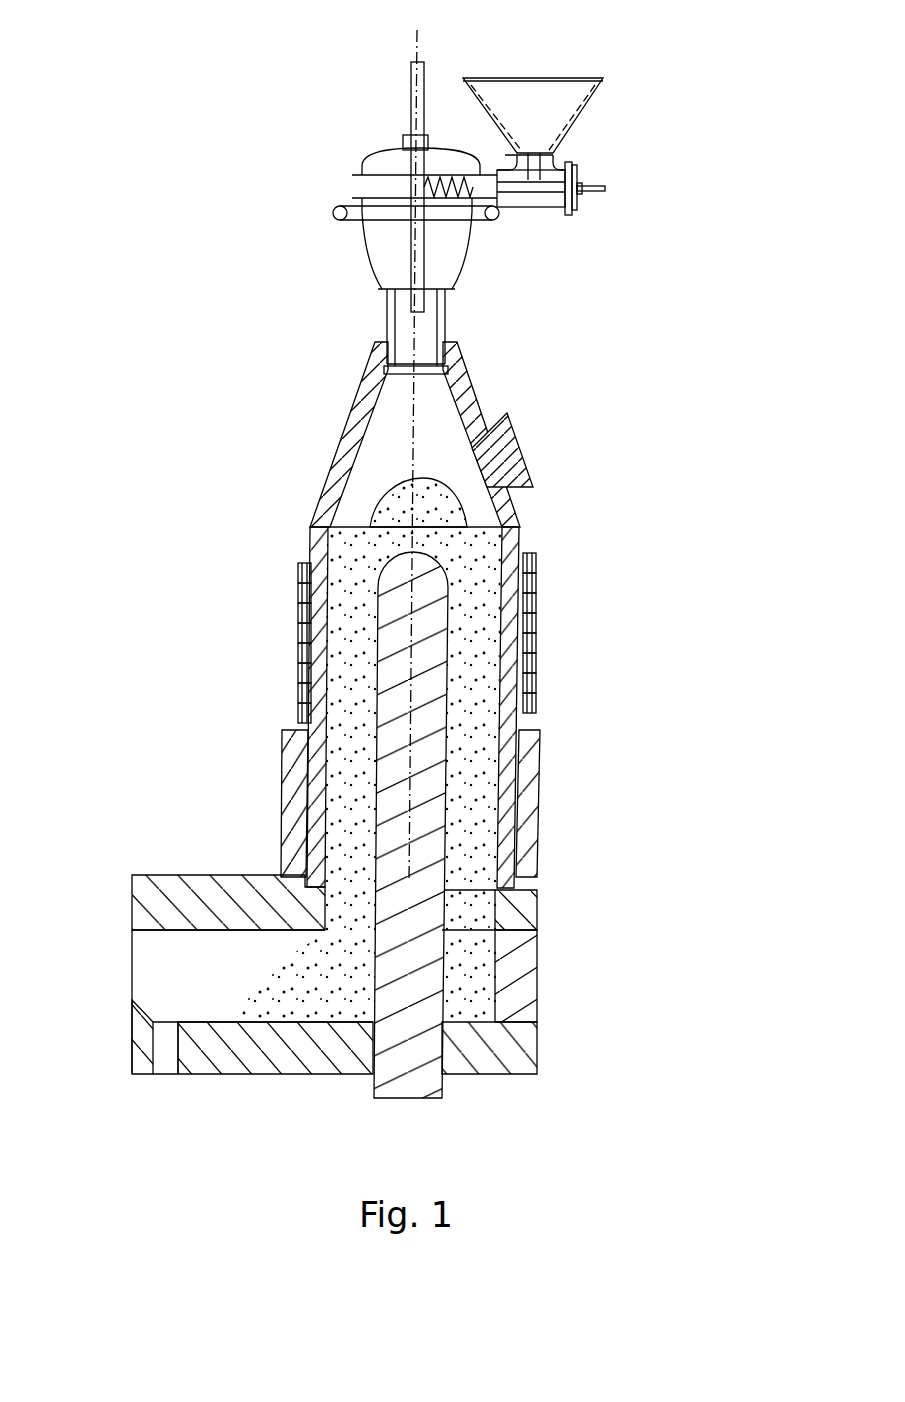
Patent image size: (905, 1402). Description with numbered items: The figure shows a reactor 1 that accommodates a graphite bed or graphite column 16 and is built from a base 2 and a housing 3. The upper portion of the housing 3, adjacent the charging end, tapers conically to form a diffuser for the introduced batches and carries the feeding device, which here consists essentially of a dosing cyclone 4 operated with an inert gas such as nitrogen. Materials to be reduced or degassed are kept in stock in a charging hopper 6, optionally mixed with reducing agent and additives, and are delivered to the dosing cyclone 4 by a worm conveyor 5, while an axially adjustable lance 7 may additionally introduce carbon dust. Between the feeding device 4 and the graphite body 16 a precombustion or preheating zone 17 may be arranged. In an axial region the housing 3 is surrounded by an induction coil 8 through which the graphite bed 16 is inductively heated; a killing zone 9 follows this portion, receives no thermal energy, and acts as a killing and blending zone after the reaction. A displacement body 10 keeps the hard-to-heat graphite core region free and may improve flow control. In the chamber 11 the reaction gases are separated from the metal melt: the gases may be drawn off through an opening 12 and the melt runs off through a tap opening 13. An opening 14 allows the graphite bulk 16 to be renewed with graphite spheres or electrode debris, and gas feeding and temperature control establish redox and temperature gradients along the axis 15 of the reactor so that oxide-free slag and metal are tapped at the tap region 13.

The reactor 1 is at (152, 207).
The base 2 is at (483, 1032).
The housing 3 is at (320, 545).
The dosing cyclone 4 is at (380, 166).
The worm conveyor 5 is at (445, 198).
The charging hopper 6 is at (555, 140).
The lance 7 is at (412, 95).
The induction coil 8 is at (522, 665).
The killing zone 9 is at (467, 837).
The displacement body 10 is at (423, 640).
The chamber 11 is at (177, 967).
The opening 12 is at (147, 975).
The tap opening 13 is at (168, 1050).
The opening 14 is at (503, 463).
The axis 15 is at (415, 440).
The graphite column 16 is at (473, 787).
The preheating zone 17 is at (397, 413).